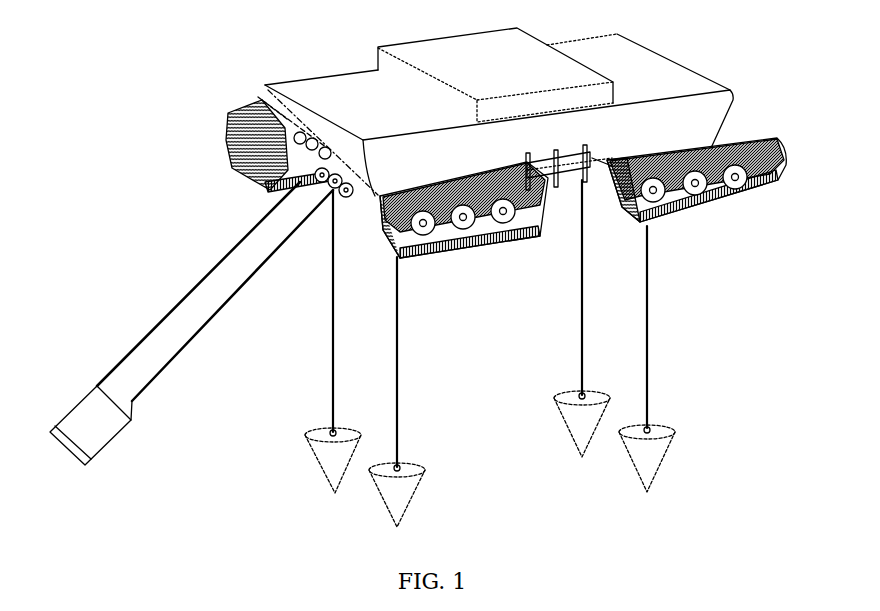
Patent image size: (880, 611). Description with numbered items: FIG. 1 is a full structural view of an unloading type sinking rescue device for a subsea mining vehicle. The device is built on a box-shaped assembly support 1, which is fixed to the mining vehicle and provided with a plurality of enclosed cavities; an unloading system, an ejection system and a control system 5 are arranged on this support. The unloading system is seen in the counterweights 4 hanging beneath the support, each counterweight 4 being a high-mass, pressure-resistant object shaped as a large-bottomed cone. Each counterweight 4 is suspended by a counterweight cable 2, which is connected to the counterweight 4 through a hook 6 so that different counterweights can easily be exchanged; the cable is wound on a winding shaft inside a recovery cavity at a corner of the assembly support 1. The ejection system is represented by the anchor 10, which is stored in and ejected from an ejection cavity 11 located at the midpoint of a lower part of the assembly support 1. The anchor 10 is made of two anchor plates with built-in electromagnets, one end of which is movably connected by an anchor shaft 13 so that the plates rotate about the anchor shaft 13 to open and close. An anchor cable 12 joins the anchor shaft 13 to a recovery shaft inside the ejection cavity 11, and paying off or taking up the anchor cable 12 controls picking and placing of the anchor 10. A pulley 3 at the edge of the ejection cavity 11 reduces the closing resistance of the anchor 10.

The assembly support 1 is at (615, 63).
The counterweight cable 2 is at (650, 313).
The pulley 3 is at (265, 85).
The counterweight 4 is at (420, 467).
The control system 5 is at (402, 55).
The hook 6 is at (330, 432).
The anchor 10 is at (92, 410).
The ejection cavity 11 is at (568, 180).
The anchor cable 12 is at (250, 278).
The anchor shaft 13 is at (130, 403).